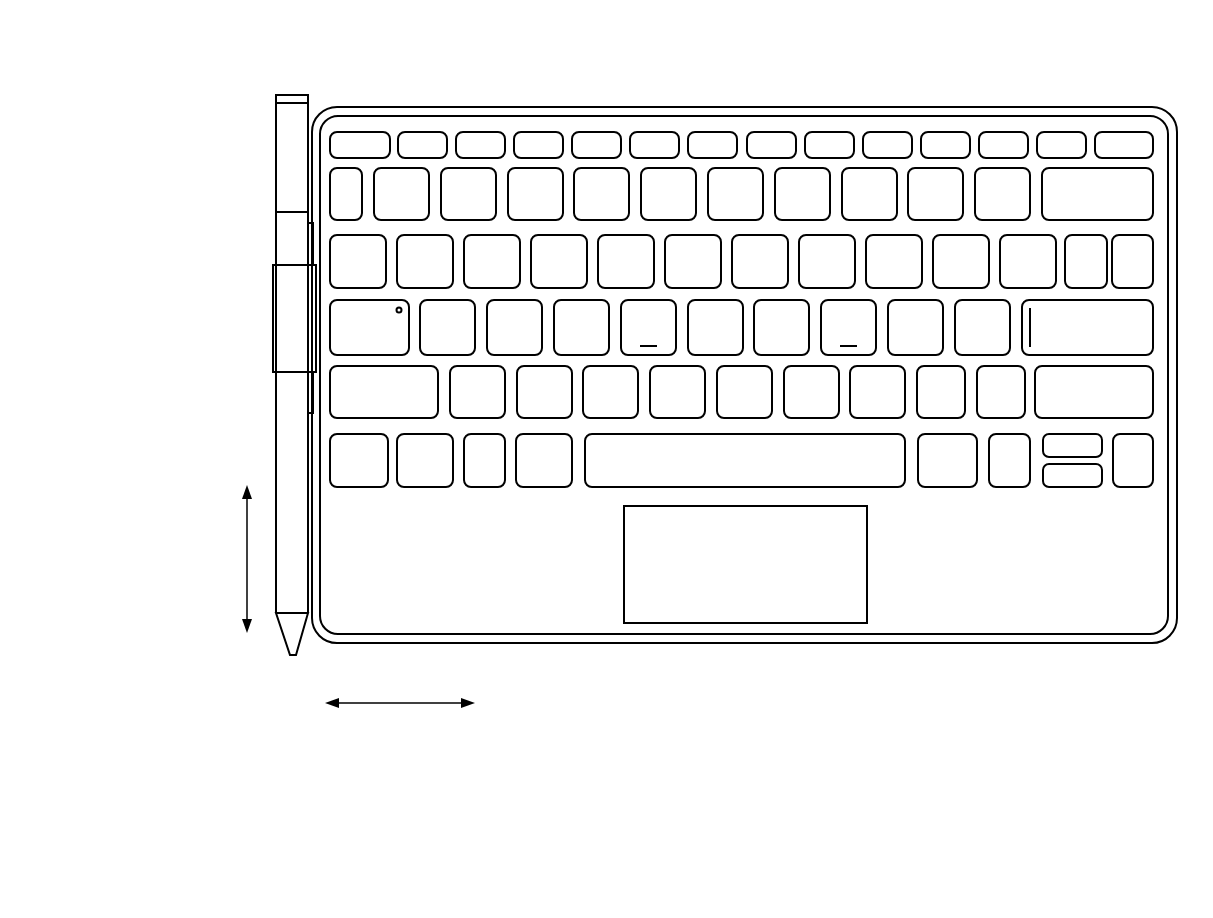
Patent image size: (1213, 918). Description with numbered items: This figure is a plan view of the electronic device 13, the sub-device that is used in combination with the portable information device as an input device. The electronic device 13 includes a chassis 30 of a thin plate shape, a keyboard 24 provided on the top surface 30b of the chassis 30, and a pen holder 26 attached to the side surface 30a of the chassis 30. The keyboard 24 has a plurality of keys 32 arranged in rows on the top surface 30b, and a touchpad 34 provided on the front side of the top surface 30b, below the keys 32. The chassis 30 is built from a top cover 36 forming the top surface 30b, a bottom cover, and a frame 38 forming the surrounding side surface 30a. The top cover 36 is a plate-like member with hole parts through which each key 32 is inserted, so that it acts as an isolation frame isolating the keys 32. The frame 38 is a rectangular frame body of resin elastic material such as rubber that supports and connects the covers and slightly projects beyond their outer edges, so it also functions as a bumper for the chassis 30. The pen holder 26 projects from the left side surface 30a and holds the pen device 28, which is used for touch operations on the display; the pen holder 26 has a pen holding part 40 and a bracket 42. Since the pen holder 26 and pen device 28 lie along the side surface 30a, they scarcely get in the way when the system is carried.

The electronic device 13 is at (247, 46).
The keyboard 24 is at (557, 107).
The pen holder 26 is at (273, 298).
The pen device 28 is at (276, 172).
The chassis 30 is at (1107, 580).
The side surface 30a is at (234, 414).
The top surface 30b is at (1000, 667).
The keys 32 is at (582, 327).
The touchpad 34 is at (752, 588).
The top cover 36 is at (1008, 617).
The frame 38 is at (307, 457).
The pen holding part 40 is at (290, 343).
The bracket 42 is at (313, 248).